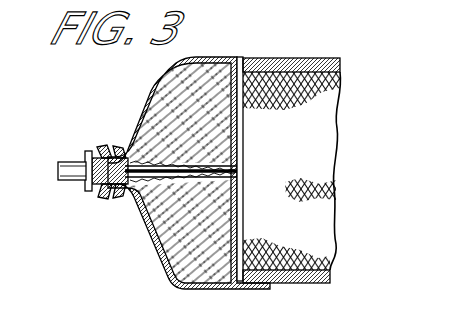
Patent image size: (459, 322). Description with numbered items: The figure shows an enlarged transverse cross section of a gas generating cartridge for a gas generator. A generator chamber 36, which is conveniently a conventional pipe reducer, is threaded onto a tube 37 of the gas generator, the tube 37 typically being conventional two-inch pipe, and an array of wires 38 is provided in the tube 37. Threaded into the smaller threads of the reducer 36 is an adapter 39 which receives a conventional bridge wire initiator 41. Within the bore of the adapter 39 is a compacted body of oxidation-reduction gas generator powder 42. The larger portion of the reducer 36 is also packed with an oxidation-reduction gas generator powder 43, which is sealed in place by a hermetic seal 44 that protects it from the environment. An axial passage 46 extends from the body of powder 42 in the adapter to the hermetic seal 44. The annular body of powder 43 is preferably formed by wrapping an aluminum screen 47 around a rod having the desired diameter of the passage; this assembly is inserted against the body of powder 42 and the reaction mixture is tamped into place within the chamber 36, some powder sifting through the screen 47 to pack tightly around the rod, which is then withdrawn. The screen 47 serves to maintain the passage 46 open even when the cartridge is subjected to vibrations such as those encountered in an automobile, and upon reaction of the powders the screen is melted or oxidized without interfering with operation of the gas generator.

The generator chamber 36 is at (154, 91).
The tube 37 is at (295, 282).
The array of wires 38 is at (309, 61).
The adapter 39 is at (92, 153).
The bridge wire initiator 41 is at (72, 182).
The oxidation-reduction gas generator powder 42 is at (126, 197).
The oxidation-reduction gas generator powder 43 is at (176, 276).
The hermetic seal 44 is at (243, 206).
The axial passage 46 is at (233, 172).
The aluminum screen 47 is at (240, 150).